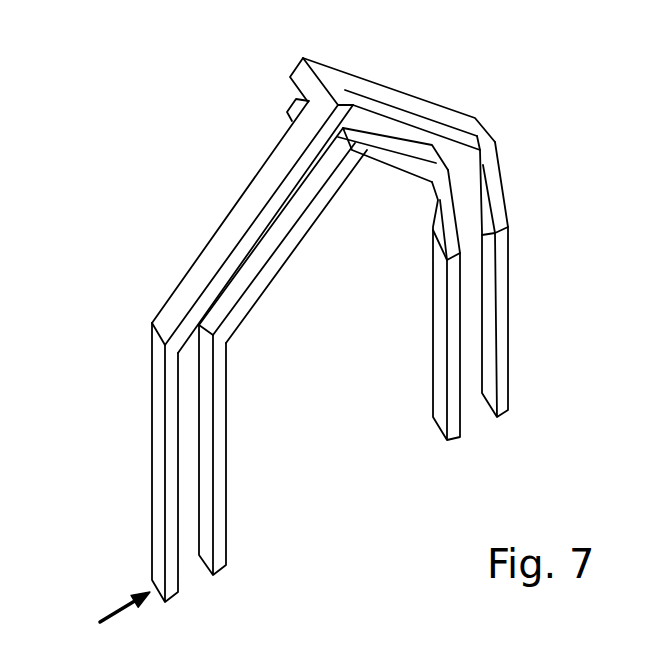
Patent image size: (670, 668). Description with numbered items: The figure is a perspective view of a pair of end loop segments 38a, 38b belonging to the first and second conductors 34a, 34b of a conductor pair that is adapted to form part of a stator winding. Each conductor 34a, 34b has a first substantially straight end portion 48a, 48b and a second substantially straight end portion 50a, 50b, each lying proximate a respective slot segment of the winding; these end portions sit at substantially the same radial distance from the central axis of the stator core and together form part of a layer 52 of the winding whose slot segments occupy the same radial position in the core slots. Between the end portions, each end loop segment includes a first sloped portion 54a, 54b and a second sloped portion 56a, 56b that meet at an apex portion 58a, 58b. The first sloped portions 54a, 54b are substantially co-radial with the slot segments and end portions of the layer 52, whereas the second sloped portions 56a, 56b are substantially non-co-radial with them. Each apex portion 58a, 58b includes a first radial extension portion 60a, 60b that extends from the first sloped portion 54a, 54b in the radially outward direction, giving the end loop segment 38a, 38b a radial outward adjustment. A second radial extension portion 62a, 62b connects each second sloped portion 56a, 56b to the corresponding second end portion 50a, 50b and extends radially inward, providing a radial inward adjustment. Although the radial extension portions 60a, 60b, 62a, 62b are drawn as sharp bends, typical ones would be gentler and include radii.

The first conductor 34a is at (152, 427).
The second conductor 34b is at (227, 478).
The end loop segment 38a is at (238, 197).
The end loop segment 38b is at (283, 252).
The first substantially straight end portion 48a is at (170, 412).
The first substantially straight end portion 48b is at (218, 435).
The second substantially straight end portion 50a is at (503, 332).
The second substantially straight end portion 50b is at (453, 380).
The layer 52 is at (105, 615).
The first sloped portion 54a is at (193, 278).
The first sloped portion 54b is at (235, 302).
The second sloped portion 56a is at (415, 102).
The second sloped portion 56b is at (417, 147).
The apex portion 58a is at (302, 70).
The apex portion 58b is at (297, 107).
The first radial extension portion 60a is at (345, 90).
The first radial extension portion 60b is at (338, 137).
The second radial extension portion 62a is at (497, 205).
The second radial extension portion 62b is at (447, 228).